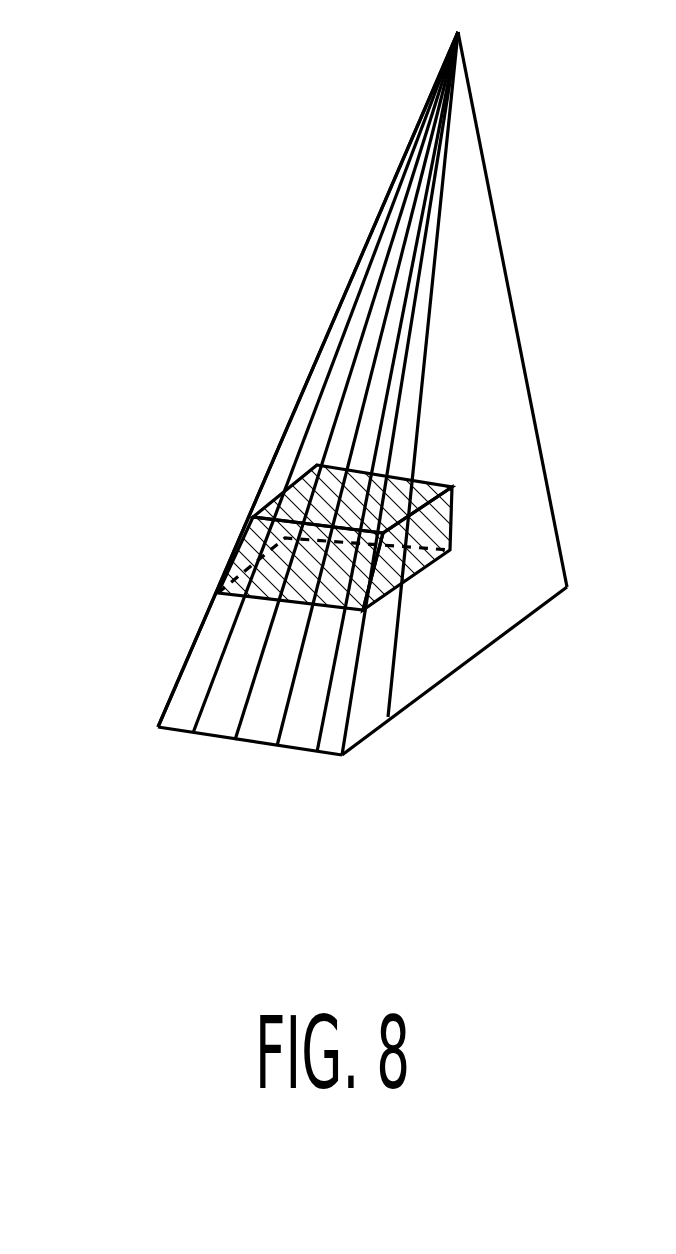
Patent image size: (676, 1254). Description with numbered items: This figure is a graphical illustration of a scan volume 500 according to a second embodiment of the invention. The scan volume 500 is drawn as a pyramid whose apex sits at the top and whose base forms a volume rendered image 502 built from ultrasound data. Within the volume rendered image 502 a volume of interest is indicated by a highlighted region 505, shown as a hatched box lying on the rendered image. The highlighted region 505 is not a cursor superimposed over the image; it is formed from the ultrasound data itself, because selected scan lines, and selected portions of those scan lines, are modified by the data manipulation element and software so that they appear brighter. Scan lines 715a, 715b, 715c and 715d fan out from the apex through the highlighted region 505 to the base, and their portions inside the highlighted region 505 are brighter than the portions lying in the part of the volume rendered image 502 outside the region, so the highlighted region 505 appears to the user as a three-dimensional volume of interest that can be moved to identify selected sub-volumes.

The imaging system / cone beam geometry 500 is at (158, 138).
The detector plane 502 is at (195, 643).
The object being imaged 505 is at (250, 518).
The scan line 715a is at (167, 723).
The scan line 715b is at (222, 720).
The scan line 715c is at (265, 723).
The scan line 715d is at (389, 692).